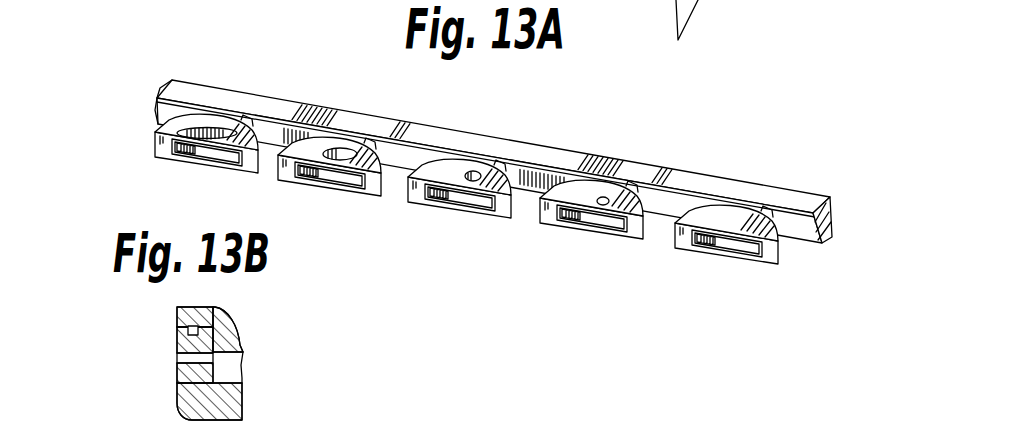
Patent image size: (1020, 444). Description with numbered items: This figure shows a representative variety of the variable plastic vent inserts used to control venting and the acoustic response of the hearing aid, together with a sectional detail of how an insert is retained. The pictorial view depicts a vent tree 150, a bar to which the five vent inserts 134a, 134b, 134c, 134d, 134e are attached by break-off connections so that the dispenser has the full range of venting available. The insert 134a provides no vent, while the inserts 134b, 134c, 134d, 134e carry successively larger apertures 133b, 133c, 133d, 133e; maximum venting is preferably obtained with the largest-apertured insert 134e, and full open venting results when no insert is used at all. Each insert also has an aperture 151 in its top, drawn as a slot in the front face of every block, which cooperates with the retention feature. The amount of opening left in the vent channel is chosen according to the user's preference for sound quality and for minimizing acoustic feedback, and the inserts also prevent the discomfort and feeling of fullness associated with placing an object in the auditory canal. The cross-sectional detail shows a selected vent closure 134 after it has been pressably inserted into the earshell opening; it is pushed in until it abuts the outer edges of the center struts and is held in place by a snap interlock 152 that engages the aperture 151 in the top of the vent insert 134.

In FIG. 13A, the vent tree 150 is at (707, 158).
In FIG. 13A, the vent insert 134a is at (742, 270).
In FIG. 13A, the vent insert 134b is at (617, 248).
In FIG. 13A, the vent insert 134c is at (492, 223).
In FIG. 13A, the vent insert 134d is at (365, 203).
In FIG. 13A, the vent insert 134e is at (217, 173).
In FIG. 13B, the vent insert 134 is at (178, 375).
In FIG. 13A, the aperture 133b is at (603, 200).
In FIG. 13A, the aperture 133c is at (473, 176).
In FIG. 13A, the aperture 133d is at (336, 152).
In FIG. 13A, the aperture 133e is at (230, 135).
In FIG. 13A, the aperture 151 is at (202, 150).
In FIG. 13B, the snap interlock 152 is at (199, 334).